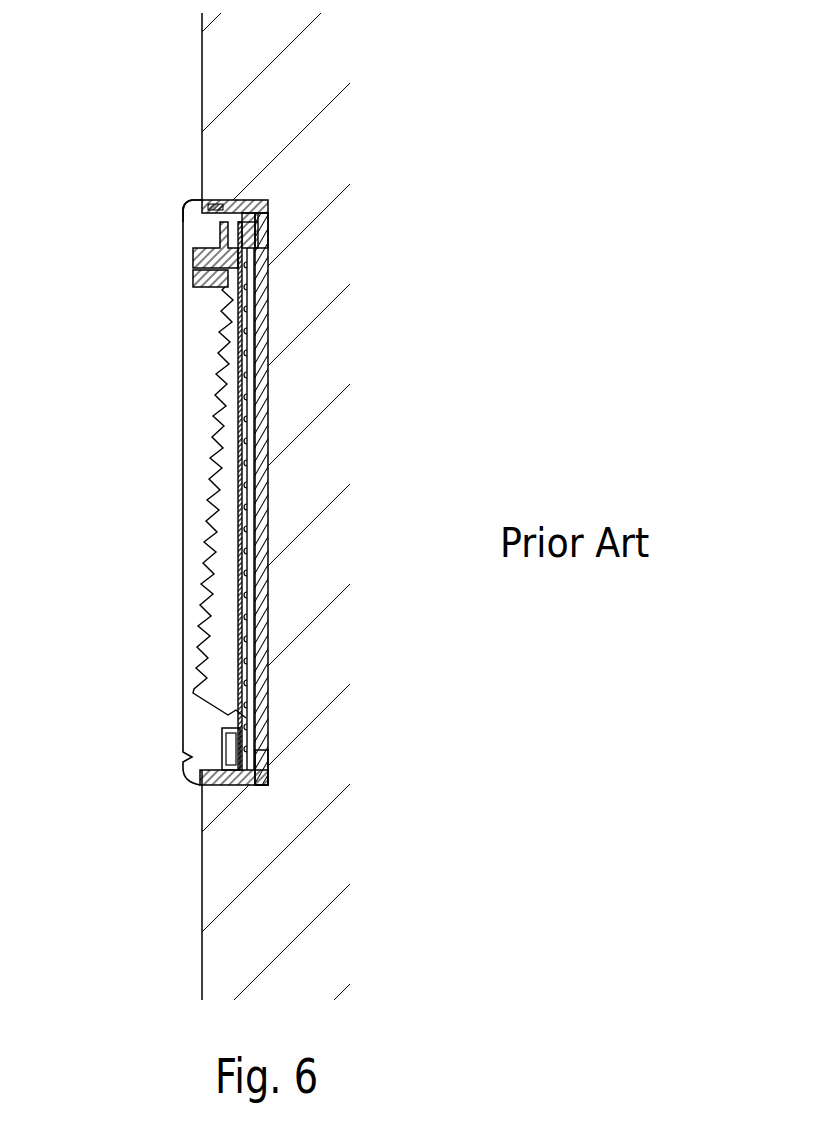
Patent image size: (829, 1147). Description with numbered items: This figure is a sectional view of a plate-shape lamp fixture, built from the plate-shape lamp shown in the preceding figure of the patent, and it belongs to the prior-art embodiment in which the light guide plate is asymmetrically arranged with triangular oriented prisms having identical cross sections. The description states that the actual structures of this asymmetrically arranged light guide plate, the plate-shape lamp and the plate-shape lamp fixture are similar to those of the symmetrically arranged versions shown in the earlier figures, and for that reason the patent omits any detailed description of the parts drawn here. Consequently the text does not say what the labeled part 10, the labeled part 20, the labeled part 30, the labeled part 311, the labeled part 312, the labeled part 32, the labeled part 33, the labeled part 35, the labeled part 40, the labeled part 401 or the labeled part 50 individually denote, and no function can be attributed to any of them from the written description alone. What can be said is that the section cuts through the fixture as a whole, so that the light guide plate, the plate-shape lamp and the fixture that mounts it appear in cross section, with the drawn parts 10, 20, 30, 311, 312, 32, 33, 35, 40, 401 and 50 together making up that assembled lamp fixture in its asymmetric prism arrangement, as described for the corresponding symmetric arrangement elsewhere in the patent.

The housing 10 is at (190, 353).
The clip member 20 is at (208, 277).
The bracket 30 is at (410, 625).
The top flange 311 is at (420, 107).
The end portion 312 is at (380, 777).
The bottom flange 32 is at (358, 863).
The outer plate 33 is at (410, 705).
The block 35 is at (155, 793).
The strip 40 is at (396, 477).
The protrusion 401 is at (400, 382).
The cap 50 is at (183, 193).